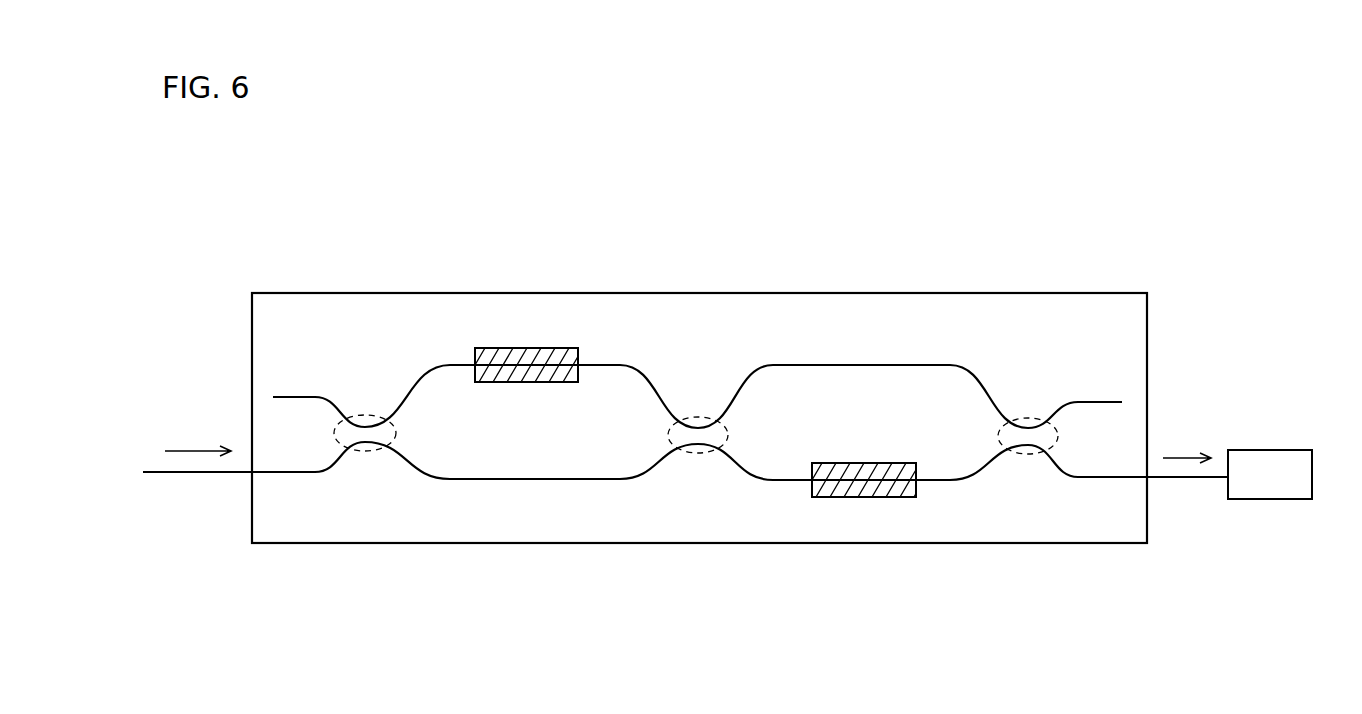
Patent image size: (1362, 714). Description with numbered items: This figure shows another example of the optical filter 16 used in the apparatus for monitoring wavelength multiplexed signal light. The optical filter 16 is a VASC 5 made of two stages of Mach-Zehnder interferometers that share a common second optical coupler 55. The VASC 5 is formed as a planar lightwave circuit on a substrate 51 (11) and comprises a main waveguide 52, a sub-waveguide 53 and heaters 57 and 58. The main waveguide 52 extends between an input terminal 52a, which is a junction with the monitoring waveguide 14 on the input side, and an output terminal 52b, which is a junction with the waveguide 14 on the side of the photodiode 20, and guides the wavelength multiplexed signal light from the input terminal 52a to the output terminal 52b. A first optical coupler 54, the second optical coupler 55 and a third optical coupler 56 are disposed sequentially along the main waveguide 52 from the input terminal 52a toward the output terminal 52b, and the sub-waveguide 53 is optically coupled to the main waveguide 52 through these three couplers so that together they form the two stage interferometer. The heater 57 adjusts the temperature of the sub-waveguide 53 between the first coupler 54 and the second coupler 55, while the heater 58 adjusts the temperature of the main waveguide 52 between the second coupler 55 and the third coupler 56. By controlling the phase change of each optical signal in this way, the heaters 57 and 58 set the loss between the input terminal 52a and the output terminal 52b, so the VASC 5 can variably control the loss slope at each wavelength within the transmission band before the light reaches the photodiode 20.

The VASC 5 is at (699, 370).
The optical filter 16 is at (699, 370).
The substrate 51 is at (699, 378).
The substrate 11 is at (423, 310).
The main waveguide 52 is at (699, 534).
The input terminal 52a is at (257, 475).
The output terminal 52b is at (1140, 478).
The sub-waveguide 53 is at (620, 365).
The first optical coupler 54 is at (365, 416).
The second optical coupler 55 is at (700, 417).
The third optical coupler 56 is at (1030, 420).
The heater 57 is at (545, 348).
The heater 58 is at (863, 498).
The monitoring waveguide 14 is at (182, 475).
The photodiode 20 is at (1295, 450).